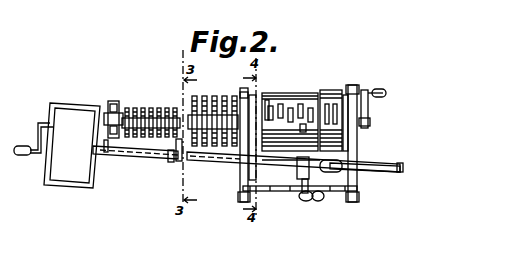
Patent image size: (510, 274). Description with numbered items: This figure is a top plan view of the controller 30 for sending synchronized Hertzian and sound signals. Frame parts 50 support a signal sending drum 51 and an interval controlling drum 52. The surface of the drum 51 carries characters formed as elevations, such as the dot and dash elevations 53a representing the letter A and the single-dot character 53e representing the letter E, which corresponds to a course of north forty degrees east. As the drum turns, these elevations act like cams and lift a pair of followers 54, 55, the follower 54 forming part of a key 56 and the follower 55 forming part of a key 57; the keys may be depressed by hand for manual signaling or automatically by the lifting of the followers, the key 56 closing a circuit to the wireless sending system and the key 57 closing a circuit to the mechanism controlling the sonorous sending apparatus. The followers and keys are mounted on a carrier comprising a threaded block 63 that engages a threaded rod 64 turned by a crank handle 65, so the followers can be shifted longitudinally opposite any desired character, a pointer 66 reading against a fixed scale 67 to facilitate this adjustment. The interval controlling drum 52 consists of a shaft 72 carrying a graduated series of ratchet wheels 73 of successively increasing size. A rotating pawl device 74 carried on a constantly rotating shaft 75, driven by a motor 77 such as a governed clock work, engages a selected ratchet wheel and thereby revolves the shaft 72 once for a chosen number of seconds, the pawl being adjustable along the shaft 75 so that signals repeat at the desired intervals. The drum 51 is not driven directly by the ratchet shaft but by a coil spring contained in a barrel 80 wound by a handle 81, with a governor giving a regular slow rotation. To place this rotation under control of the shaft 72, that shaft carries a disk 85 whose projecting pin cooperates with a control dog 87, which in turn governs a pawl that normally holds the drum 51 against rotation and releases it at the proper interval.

The controller 30 is at (352, 132).
The frame parts 50 is at (115, 100).
The signal sending drum 51 is at (303, 124).
The interval controlling drum 52 is at (150, 108).
The dot and dash elevations 53a is at (278, 93).
The character E 53e is at (327, 90).
The follower 54 is at (272, 182).
The follower 55 is at (320, 162).
The key 56 is at (308, 201).
The key 57 is at (320, 201).
The threaded block 63 is at (322, 160).
The threaded rod 64 is at (360, 172).
The crank handle 65 is at (365, 171).
The pointer 66 is at (300, 190).
The fixed scale 67 is at (326, 192).
The shaft 72 is at (192, 163).
The ratchet wheels 73 is at (214, 150).
The rotating pawl device 74 is at (176, 160).
The constantly rotating shaft 75 is at (130, 140).
The motor 77 is at (62, 168).
The barrel 80 is at (366, 90).
The handle 81 is at (386, 92).
The disk 85 is at (267, 100).
The control dog 87 is at (243, 204).